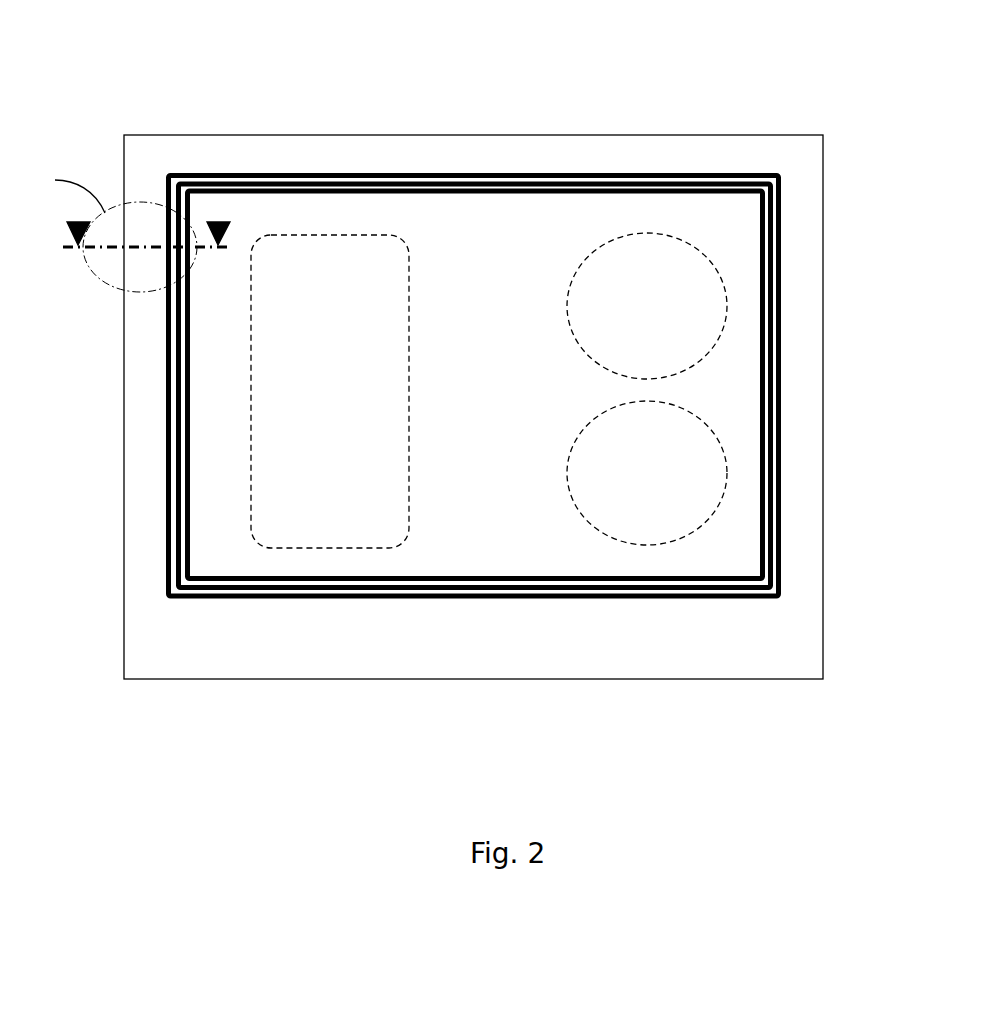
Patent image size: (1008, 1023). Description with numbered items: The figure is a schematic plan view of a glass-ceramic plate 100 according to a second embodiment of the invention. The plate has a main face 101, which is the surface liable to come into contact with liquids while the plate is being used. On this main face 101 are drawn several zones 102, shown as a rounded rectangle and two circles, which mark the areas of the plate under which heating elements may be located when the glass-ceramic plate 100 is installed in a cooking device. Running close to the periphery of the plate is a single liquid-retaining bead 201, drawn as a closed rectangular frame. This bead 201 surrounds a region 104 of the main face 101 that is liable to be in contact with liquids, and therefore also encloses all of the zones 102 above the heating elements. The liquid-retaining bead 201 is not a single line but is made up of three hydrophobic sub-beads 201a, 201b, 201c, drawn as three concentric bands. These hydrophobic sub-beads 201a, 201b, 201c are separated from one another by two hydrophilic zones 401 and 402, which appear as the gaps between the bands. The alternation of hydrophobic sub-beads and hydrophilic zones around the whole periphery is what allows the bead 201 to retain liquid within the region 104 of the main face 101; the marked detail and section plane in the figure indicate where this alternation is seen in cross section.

The glass-ceramic plate 100 is at (154, 104).
The main face 101 is at (647, 157).
The zones 102 is at (252, 392).
The region 104 is at (498, 209).
The liquid-retaining bead 201 is at (498, 604).
The hydrophobic sub-bead 201a is at (392, 597).
The hydrophobic sub-bead 201b is at (286, 588).
The hydrophobic sub-bead 201c is at (197, 580).
The hydrophilic zone 401 is at (606, 592).
The hydrophilic zone 402 is at (738, 583).